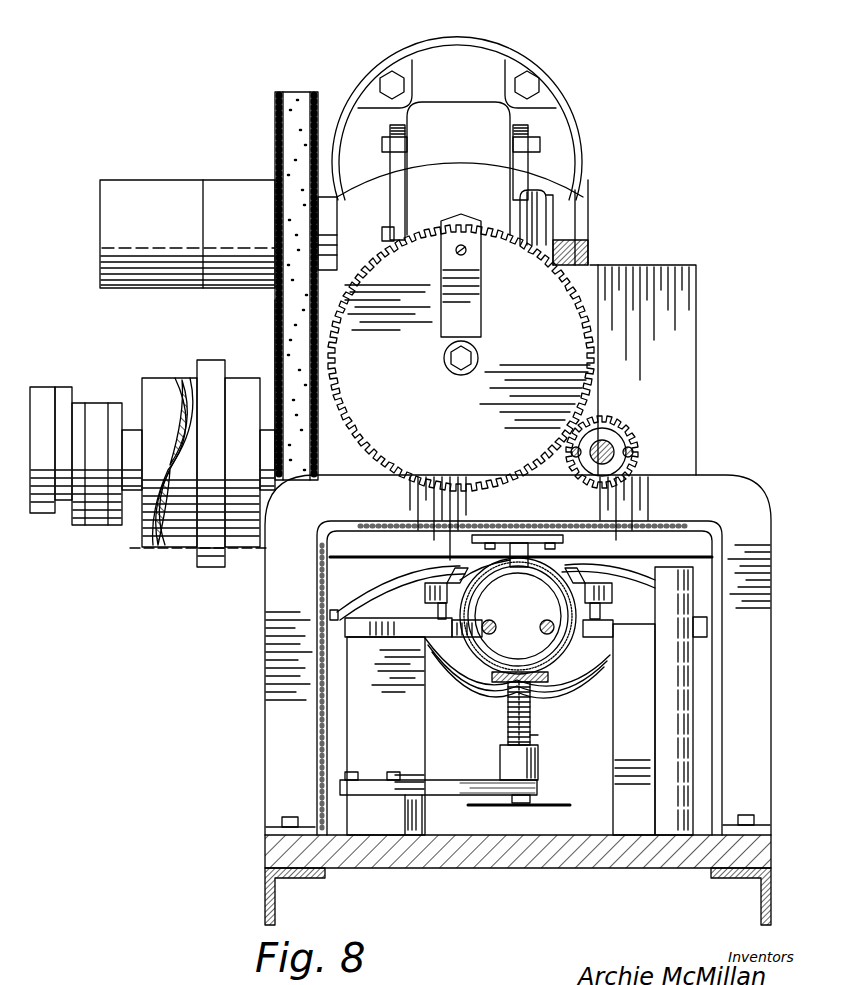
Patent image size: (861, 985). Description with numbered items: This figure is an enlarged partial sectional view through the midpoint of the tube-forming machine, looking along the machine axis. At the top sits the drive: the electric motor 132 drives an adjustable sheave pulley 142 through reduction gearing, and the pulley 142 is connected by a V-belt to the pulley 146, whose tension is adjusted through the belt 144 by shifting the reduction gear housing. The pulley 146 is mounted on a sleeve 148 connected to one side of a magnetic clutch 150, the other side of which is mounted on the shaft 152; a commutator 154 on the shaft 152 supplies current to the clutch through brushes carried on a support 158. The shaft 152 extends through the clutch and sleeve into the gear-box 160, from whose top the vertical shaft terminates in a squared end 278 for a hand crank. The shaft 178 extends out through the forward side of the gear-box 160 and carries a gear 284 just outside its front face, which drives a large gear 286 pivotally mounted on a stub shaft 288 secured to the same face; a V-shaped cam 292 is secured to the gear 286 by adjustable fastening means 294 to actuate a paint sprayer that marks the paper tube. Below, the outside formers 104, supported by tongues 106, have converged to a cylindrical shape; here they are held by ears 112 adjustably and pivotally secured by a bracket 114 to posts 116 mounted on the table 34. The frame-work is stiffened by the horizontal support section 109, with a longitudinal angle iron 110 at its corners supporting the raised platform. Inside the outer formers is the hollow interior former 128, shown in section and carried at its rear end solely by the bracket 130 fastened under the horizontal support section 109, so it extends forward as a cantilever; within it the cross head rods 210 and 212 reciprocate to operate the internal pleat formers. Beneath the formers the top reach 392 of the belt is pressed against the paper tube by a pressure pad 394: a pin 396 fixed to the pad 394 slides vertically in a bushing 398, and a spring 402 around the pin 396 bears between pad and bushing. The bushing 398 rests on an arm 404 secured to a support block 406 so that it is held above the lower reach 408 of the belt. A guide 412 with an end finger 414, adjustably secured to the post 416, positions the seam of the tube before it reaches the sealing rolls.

The table 34 is at (495, 855).
The outside formers 104 is at (518, 616).
The tongues 106 is at (330, 603).
The horizontal support section 109 is at (710, 488).
The longitudinal angle iron 110 is at (328, 548).
The ears 112 is at (438, 588).
The bracket 114 is at (615, 650).
The posts 116 is at (345, 718).
The interior former 128 is at (560, 668).
The bracket 130 is at (518, 538).
The electric motor 132 is at (577, 140).
The pulley 142 is at (270, 172).
The belt 144 is at (293, 322).
The pulley 146 is at (277, 372).
The sleeve 148 is at (268, 452).
The magnetic clutch 150 is at (213, 550).
The shaft 152 is at (65, 490).
The commutator 154 is at (97, 512).
The support 158 is at (67, 395).
The gear-box 160 is at (680, 300).
The shaft 178 is at (604, 442).
The cross head rod 210 is at (510, 620).
The cross head rod 212 is at (497, 632).
The squared end 278 is at (575, 208).
The gear 284 is at (636, 452).
The large gear 286 is at (577, 305).
The stub shaft 288 is at (445, 363).
The V-shaped cam 292 is at (462, 318).
The adjustable fastening means 294 is at (456, 252).
The top reach of belt 392 is at (497, 682).
The pressure pad 394 is at (545, 683).
The pin 396 is at (538, 735).
The bushing 398 is at (540, 765).
The spring 402 is at (510, 732).
The arm 404 is at (440, 795).
The support block 406 is at (365, 828).
The lower reach of belt 408 is at (540, 808).
The guide 412 is at (596, 556).
The end finger 414 is at (510, 562).
The post 416 is at (665, 710).